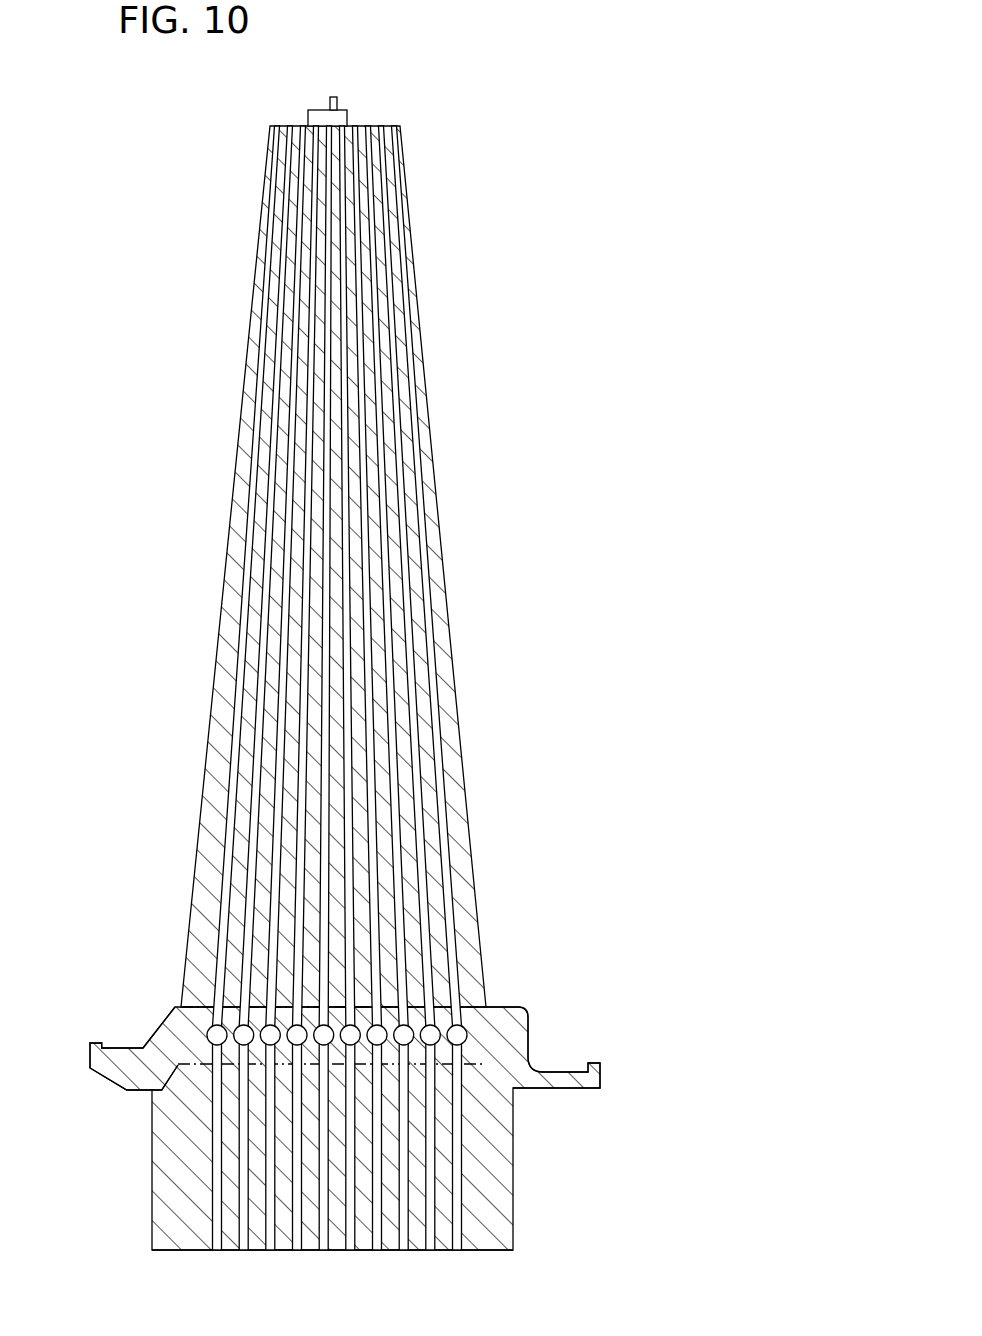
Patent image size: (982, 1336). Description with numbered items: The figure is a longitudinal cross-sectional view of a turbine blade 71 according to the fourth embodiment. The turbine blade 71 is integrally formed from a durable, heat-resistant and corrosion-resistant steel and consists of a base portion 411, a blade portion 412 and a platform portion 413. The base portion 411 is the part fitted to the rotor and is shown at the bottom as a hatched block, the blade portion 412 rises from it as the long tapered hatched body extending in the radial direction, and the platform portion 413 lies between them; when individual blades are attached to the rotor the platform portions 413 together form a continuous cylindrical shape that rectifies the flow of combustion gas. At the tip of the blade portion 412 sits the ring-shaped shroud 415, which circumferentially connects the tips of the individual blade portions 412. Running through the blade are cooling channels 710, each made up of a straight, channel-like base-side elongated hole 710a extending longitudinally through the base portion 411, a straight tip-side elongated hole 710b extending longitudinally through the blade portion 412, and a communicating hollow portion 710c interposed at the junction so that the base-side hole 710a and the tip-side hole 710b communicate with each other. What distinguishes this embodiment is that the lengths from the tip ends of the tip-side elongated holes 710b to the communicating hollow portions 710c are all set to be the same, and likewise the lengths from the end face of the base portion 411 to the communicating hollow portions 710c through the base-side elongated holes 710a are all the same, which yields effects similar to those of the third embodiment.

The turbine blade 71 is at (112, 203).
The base portion 411 is at (151, 1175).
The blade portion 412 is at (234, 510).
The platform portion 413 is at (173, 1008).
The shroud 415 is at (318, 110).
The cooling channel 710 is at (446, 688).
The base-side elongated hole 710a is at (402, 1230).
The tip-side elongated hole 710b is at (393, 847).
The communicating hollow portion 710c is at (439, 989).